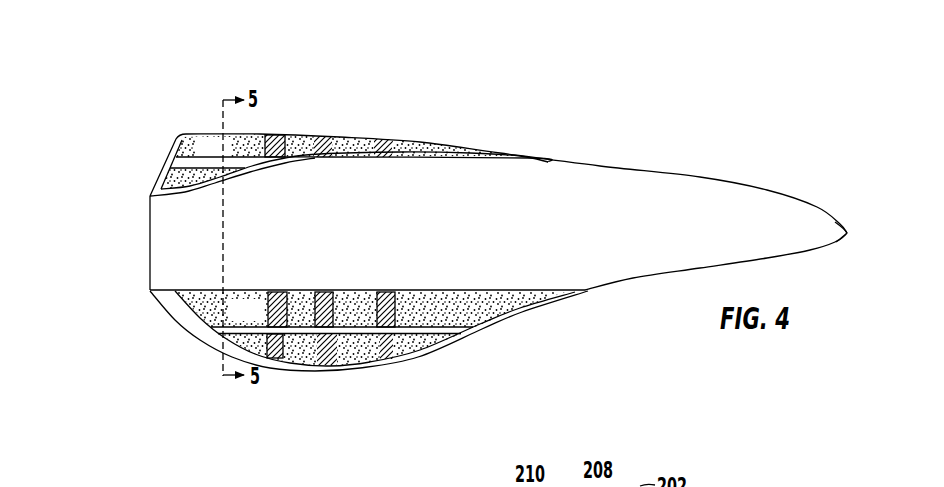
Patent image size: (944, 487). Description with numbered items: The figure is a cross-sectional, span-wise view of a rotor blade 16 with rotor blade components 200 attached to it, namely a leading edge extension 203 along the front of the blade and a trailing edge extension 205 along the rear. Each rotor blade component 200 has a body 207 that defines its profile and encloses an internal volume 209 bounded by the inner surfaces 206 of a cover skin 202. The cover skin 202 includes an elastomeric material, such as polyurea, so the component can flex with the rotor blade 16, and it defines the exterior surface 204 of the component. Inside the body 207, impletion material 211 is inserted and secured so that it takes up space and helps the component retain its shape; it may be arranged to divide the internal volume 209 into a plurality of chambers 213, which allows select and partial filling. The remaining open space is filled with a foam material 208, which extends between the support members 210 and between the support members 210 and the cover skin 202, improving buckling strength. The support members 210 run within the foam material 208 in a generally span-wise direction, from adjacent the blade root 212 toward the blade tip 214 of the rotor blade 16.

The rotor blade 16 is at (801, 145).
The rotor blade component 200 is at (152, 142).
The cover skin 202 is at (439, 137).
The leading edge extension 203 is at (373, 134).
The exterior surface 204 is at (302, 137).
The trailing edge extension 205 is at (283, 362).
The inner surface 206 is at (346, 135).
The body 207 is at (165, 178).
The foam material 208 is at (290, 137).
The internal volume 209 is at (229, 158).
The support member 210 is at (192, 162).
The impletion material 211 is at (263, 137).
The blade root 212 is at (150, 252).
The chamber 213 is at (362, 293).
The blade tip 214 is at (848, 233).